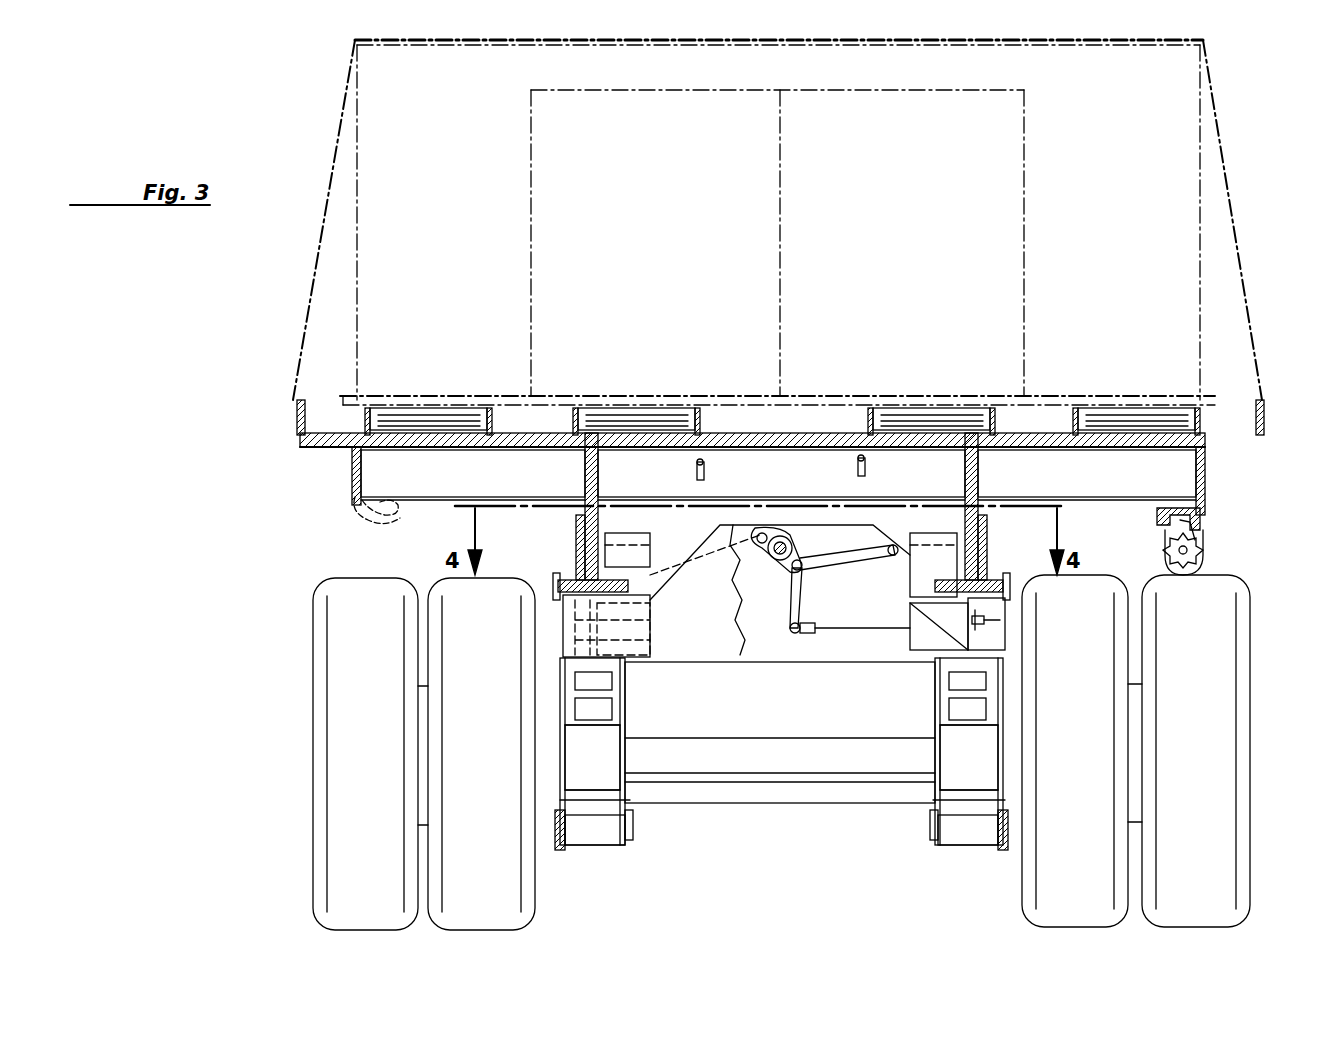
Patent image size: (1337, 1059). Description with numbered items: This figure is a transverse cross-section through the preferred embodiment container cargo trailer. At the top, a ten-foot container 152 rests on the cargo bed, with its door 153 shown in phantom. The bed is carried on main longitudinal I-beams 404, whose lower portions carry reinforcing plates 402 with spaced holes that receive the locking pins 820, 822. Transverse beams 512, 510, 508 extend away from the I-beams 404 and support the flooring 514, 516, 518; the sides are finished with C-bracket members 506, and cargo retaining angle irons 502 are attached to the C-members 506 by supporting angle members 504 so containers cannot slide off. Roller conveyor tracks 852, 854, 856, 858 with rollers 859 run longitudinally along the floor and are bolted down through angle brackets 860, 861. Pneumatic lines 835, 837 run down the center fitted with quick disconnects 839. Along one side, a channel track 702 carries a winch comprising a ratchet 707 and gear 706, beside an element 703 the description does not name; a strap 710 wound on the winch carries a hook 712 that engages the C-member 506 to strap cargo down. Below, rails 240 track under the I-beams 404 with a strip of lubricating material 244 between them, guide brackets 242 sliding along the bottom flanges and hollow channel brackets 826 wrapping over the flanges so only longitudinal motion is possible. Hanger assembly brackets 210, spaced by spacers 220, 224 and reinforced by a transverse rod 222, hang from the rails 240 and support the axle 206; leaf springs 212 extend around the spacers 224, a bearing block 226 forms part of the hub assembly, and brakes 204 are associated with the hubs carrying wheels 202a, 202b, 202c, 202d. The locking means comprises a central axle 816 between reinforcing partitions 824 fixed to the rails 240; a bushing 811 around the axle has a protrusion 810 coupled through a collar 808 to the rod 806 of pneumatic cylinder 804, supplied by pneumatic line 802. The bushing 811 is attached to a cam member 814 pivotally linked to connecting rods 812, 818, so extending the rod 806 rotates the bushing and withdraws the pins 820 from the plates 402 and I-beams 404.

The container 152 is at (1165, 133).
The door 153 is at (570, 228).
The strap 710 is at (1245, 285).
The cargo retaining angle iron 502 is at (300, 422).
The supporting angle member 504 is at (350, 445).
The C-bracket member 506 is at (350, 480).
The hook 712 is at (345, 525).
The channel track 702 is at (1205, 518).
The latch bracket 703 is at (1157, 512).
The ratchet 707 is at (1205, 530).
The gear 706 is at (1200, 568).
The conveyor track 852 is at (408, 400).
The conveyor track 854 is at (648, 400).
The conveyor track 856 is at (915, 400).
The conveyor track 858 is at (1122, 400).
The roller 859 is at (1100, 410).
The roller conveyor angle bracket 860 is at (1200, 430).
The roller conveyor angle bracket 861 is at (1073, 430).
The flooring 514 is at (520, 430).
The flooring 516 is at (735, 440).
The flooring 518 is at (1010, 430).
The transverse beam 512 is at (498, 482).
The transverse beam 510 is at (798, 479).
The transverse beam 508 is at (1116, 482).
The main longitudinal I-beam 404 is at (584, 470).
The reinforcing plate 402 is at (576, 522).
The pneumatic line 835 is at (695, 468).
The pneumatic line 837 is at (925, 468).
The quick disconnect 839 is at (704, 475).
The hollow channel bracket 826 is at (640, 540).
The connecting rod 818 is at (740, 548).
The central axle 816 is at (770, 555).
The connecting rod 812 is at (855, 555).
The locking pin 822 is at (915, 555).
The cam member 814 is at (800, 585).
The bushing 811 is at (715, 618).
The protrusion 810 is at (790, 605).
The locking pin 820 is at (625, 600).
The spacer 224 is at (575, 580).
The strip of solid lubricating material 244 is at (985, 560).
The guide bracket 242 is at (555, 590).
The pneumatic line 802 is at (1000, 627).
The rail 240 is at (630, 655).
The reinforcing partition 824 is at (760, 655).
The collar 808 is at (800, 633).
The rod 806 is at (850, 632).
The cylinder 804 is at (912, 648).
The leaf spring 212 is at (595, 680).
The bearing block 226 is at (590, 755).
The hanger assembly bracket 210 is at (560, 780).
The axle 206 is at (1000, 745).
The transverse rod 222 is at (890, 792).
The spacer 220 is at (592, 832).
The brake 204 is at (420, 752).
The wheel 202a is at (345, 890).
The wheel 202b is at (520, 898).
The wheel 202c is at (1055, 905).
The wheel 202d is at (1215, 905).